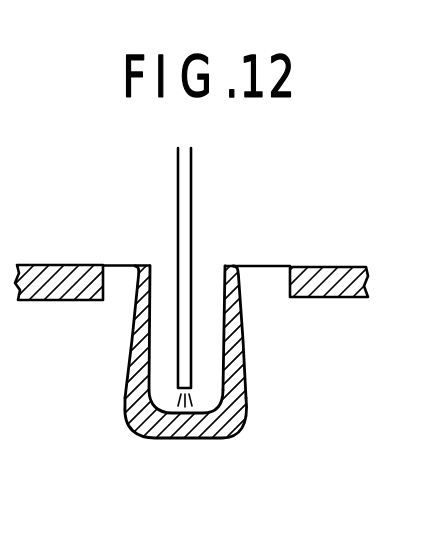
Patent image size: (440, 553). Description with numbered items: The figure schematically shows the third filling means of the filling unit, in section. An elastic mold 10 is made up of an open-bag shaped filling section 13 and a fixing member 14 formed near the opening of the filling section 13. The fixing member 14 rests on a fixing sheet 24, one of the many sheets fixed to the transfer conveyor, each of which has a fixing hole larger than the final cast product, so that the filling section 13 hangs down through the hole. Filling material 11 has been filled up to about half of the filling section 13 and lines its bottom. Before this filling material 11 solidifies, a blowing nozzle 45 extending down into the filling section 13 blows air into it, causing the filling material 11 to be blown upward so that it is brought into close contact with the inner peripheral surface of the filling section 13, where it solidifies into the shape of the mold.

The elastic mold 10 is at (218, 379).
The filling material 11 is at (266, 404).
The filling section 13 is at (146, 428).
The fixing member 14 is at (263, 265).
The fixing sheet 24 is at (337, 297).
The blowing nozzle 45 is at (191, 175).